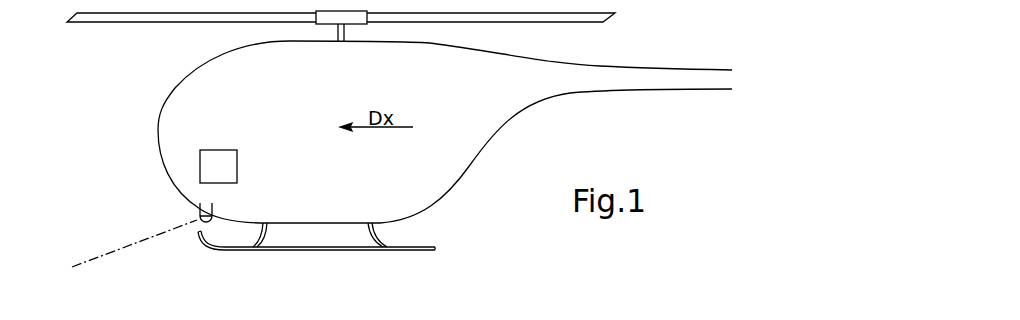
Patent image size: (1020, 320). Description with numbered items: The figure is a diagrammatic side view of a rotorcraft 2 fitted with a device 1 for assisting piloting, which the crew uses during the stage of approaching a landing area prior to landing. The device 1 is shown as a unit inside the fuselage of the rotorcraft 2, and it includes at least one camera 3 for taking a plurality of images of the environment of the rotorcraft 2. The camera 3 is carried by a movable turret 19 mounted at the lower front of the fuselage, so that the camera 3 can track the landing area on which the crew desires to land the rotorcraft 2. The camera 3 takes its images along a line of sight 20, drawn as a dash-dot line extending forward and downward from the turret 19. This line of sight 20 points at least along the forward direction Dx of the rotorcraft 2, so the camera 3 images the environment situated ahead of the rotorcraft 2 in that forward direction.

The device for assisting piloting 1 is at (237, 167).
The rotorcraft 2 is at (175, 88).
The camera 3 is at (195, 226).
The movable turret 19 is at (199, 209).
The line of sight 20 is at (102, 256).